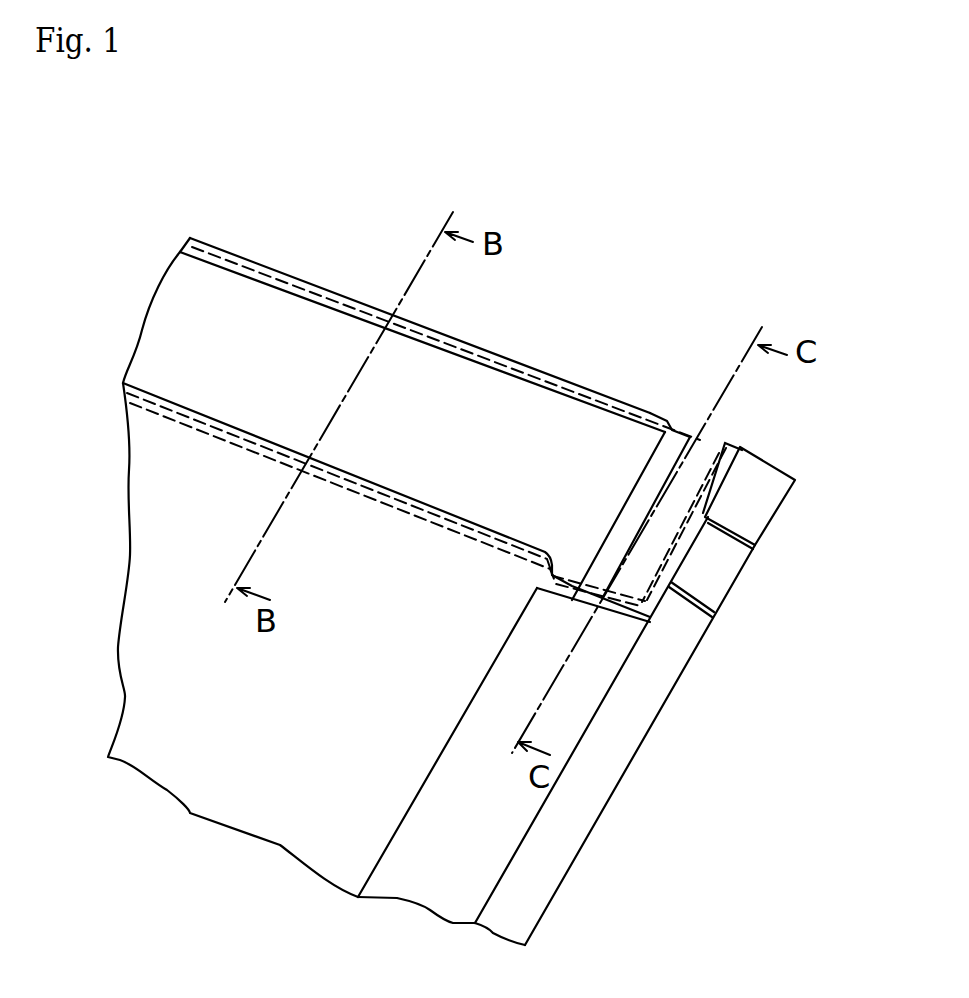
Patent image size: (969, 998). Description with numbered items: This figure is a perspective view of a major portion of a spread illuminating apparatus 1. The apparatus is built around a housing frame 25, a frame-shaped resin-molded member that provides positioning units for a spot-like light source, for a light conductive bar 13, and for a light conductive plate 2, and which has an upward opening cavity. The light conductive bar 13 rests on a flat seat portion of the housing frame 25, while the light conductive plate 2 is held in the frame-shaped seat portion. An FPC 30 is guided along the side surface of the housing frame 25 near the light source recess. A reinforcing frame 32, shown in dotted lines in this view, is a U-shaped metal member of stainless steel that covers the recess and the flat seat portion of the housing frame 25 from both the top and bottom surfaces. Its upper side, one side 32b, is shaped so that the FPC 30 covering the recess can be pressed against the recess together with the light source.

The spread illuminating apparatus 1 is at (353, 199).
The light conductive plate 2 is at (258, 729).
The light conductive bar 13 is at (485, 442).
The housing frame 25 is at (527, 888).
The FPC 30 is at (712, 565).
The reinforcing frame 32 is at (415, 512).
The one side of the reinforcing frame 32b is at (710, 442).